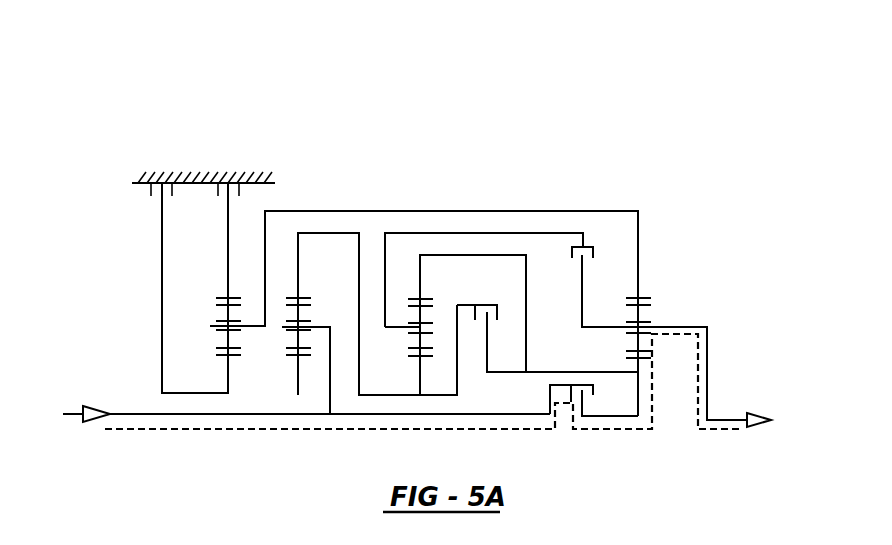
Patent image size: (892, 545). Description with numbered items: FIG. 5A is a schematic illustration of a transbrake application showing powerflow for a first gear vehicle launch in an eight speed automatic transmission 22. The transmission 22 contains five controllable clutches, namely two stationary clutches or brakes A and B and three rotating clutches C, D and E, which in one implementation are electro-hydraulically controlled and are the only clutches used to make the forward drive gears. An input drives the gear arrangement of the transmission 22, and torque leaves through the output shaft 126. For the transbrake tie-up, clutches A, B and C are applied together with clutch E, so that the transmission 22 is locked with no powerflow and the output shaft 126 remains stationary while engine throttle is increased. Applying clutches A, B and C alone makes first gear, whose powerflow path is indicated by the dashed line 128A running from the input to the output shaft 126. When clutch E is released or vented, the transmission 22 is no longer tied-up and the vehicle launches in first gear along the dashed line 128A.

The eight speed automatic transmission 22 is at (643, 176).
The output shaft 126 is at (716, 420).
The dashed line 128A is at (325, 432).